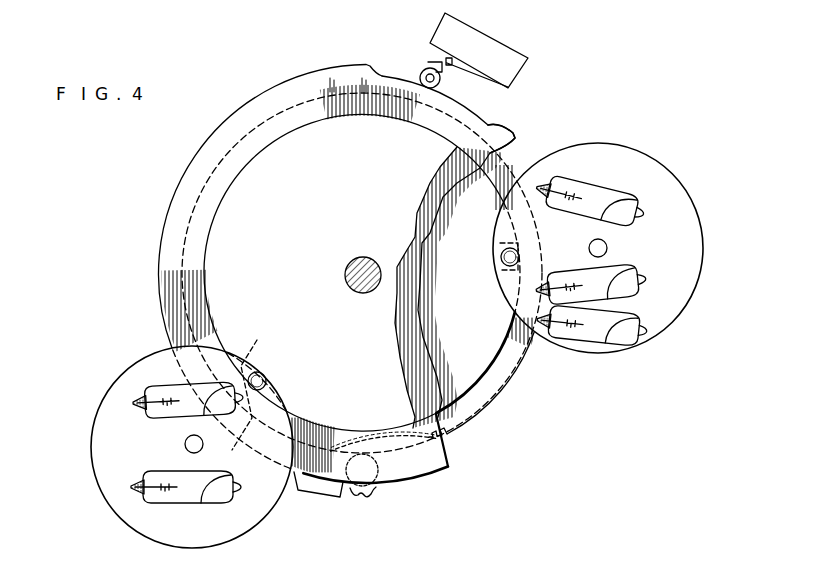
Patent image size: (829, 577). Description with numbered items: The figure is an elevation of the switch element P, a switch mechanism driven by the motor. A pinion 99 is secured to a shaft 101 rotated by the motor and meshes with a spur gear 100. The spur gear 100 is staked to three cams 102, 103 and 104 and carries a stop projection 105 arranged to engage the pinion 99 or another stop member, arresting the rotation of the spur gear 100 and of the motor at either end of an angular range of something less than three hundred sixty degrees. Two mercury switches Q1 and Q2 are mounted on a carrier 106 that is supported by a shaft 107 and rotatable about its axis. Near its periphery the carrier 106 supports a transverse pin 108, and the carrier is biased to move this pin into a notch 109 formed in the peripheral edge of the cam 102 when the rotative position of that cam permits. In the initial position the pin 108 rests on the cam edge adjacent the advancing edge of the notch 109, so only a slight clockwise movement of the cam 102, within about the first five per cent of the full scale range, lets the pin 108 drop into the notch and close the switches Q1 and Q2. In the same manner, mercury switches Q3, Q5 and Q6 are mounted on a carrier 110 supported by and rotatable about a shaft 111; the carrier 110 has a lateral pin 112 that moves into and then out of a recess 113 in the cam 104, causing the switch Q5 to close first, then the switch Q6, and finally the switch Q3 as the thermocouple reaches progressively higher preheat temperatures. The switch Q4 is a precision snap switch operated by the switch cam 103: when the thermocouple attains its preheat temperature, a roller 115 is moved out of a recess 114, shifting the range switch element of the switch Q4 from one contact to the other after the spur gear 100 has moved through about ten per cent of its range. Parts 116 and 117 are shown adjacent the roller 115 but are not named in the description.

The switch element P is at (300, 49).
The pinion 99 is at (367, 494).
The spur gear 100 is at (456, 437).
The shaft 101 is at (350, 263).
The cam 102 is at (258, 211).
The switch cam 103 is at (267, 103).
The cam 104 is at (480, 332).
The stop projection 105 is at (317, 490).
The carrier 106 is at (110, 448).
The shaft 107 is at (185, 444).
The pin 108 is at (262, 380).
The notch 109 is at (255, 366).
The carrier 110 is at (670, 188).
The shaft 111 is at (590, 246).
The pin 112 is at (504, 254).
The recess 113 is at (505, 276).
The recess 114 is at (490, 125).
The roller 115 is at (425, 70).
The lever arm 116 is at (466, 76).
The block 117 is at (447, 34).
The mercury switch Q1 is at (170, 388).
The mercury switch Q2 is at (208, 494).
The mercury switch Q3 is at (605, 195).
The precision snap switch Q4 is at (493, 50).
The mercury switch Q5 is at (622, 270).
The mercury switch Q6 is at (628, 317).